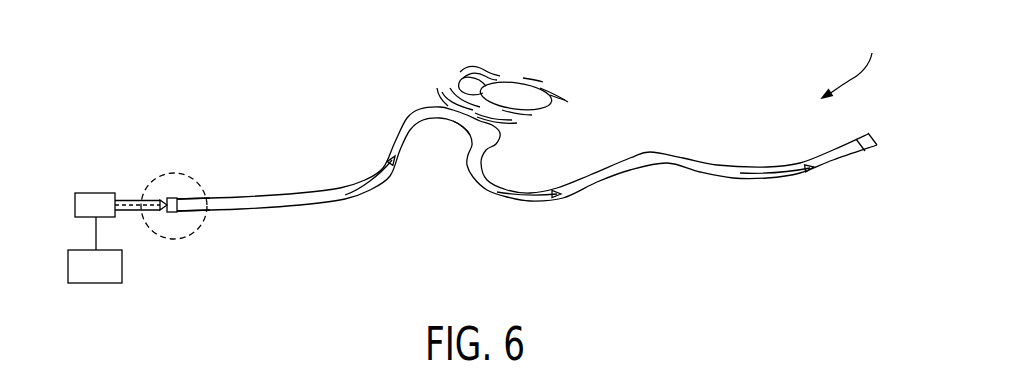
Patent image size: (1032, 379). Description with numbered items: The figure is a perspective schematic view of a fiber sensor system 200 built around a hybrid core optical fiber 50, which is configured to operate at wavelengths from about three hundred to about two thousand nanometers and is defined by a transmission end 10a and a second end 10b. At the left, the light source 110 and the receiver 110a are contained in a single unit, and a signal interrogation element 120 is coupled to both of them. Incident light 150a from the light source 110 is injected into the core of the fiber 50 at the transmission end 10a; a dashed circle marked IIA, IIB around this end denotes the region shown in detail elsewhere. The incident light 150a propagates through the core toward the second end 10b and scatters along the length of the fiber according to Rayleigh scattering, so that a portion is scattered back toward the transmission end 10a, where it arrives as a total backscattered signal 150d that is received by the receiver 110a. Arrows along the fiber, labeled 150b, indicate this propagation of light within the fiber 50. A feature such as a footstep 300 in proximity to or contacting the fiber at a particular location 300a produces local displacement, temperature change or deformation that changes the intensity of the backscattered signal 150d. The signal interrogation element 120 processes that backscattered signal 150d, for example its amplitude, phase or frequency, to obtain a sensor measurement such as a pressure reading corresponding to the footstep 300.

The light source 110 is at (71, 163).
The receiver 110a is at (86, 193).
The signal interrogation element 120 is at (68, 268).
The incident light 150a is at (140, 201).
The transmission end 10a is at (176, 199).
The detail view region (FIGS. IIA, IIB) IIA is at (199, 181).
The detail view region (FIGS. IIA, IIB) IIB is at (205, 185).
The total backscattered signal 150d is at (163, 240).
The optical fiber 50 is at (613, 165).
The second end 10b is at (873, 137).
The catheter shaft / flow direction 150b is at (378, 187).
The footstep 300 is at (506, 90).
The location 300a is at (463, 123).
The fiber sensor system 200 is at (853, 62).